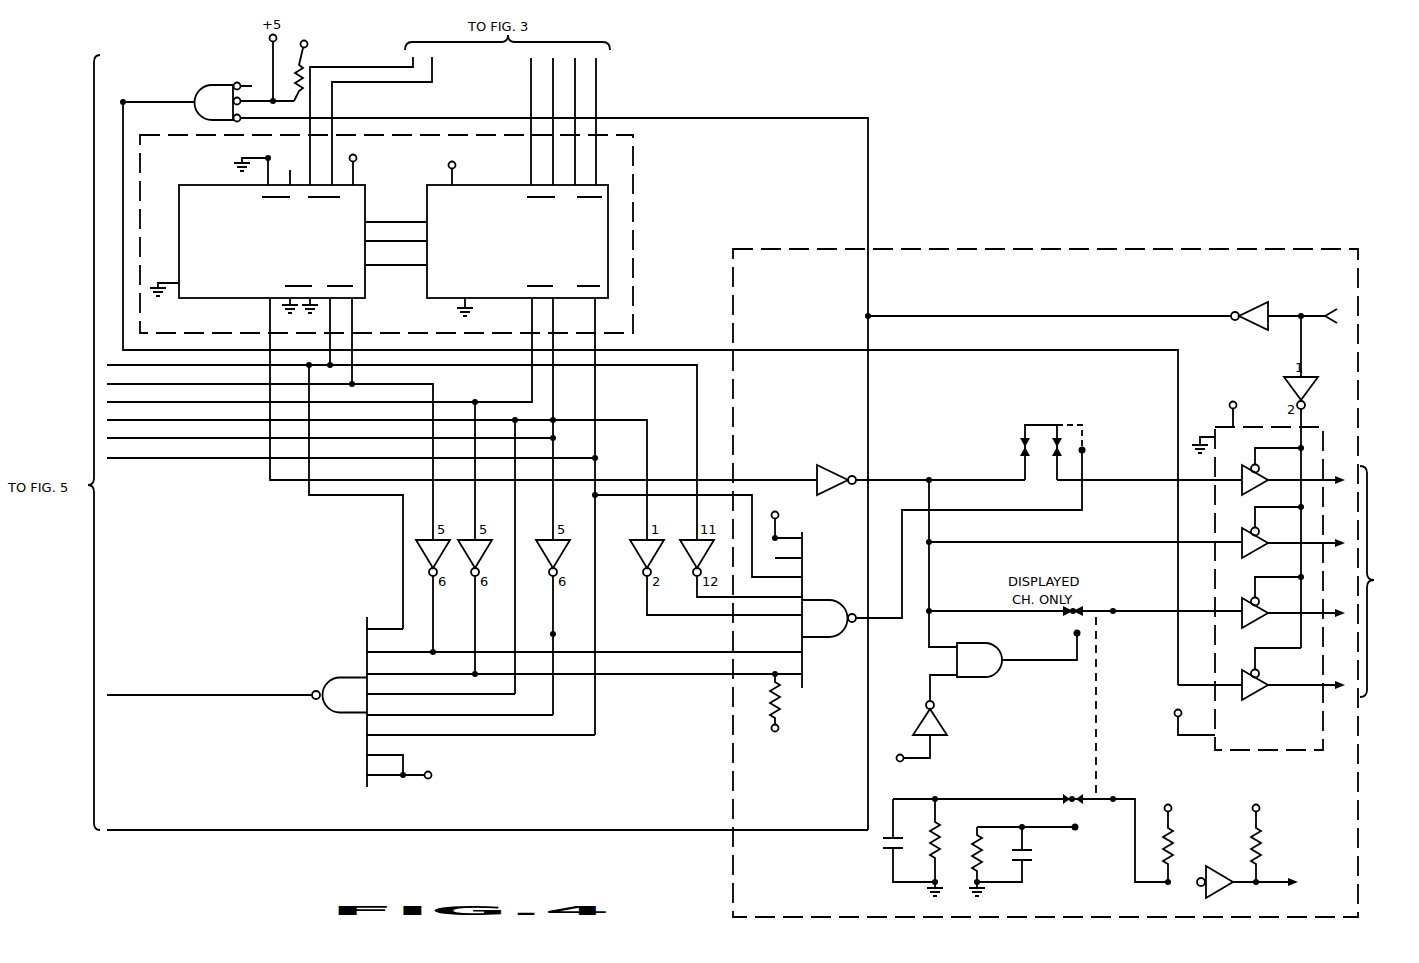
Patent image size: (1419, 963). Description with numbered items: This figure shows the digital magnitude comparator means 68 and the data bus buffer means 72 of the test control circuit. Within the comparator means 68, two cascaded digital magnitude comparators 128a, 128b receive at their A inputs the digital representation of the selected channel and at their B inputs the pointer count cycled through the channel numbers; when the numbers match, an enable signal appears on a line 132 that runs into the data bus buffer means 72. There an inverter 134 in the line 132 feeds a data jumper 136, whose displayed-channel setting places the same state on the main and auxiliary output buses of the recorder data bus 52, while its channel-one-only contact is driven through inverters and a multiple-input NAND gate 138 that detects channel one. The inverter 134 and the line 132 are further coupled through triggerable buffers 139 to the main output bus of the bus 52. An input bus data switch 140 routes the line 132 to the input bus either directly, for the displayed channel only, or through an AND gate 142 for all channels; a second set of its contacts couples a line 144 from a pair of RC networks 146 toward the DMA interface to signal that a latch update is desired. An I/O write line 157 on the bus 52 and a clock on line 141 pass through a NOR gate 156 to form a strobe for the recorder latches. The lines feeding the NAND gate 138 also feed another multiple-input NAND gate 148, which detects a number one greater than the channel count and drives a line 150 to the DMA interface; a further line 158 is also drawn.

The recorder data bus 52 is at (1363, 596).
The digital magnitude comparator means 68 is at (644, 228).
The data bus buffer means 72 is at (959, 245).
The digital magnitude comparator 128a is at (362, 190).
The digital magnitude comparator 128b is at (498, 192).
The line 132 is at (785, 477).
The inverter 134 is at (834, 466).
The data jumper 136 is at (1057, 418).
The multiple-input NAND gate 138 is at (822, 599).
The triggerable buffers 139 is at (1205, 577).
The input bus data switch 140 is at (1110, 740).
The clock line 141 is at (303, 41).
The AND gate 142 is at (984, 681).
The line 144 is at (1272, 879).
The RC networks 146 is at (966, 822).
The multiple-input NAND gate 148 is at (342, 680).
The line 150 is at (218, 690).
The NOR gate 156 is at (212, 88).
The I/O write line 157 is at (123, 100).
The line 158 is at (425, 118).